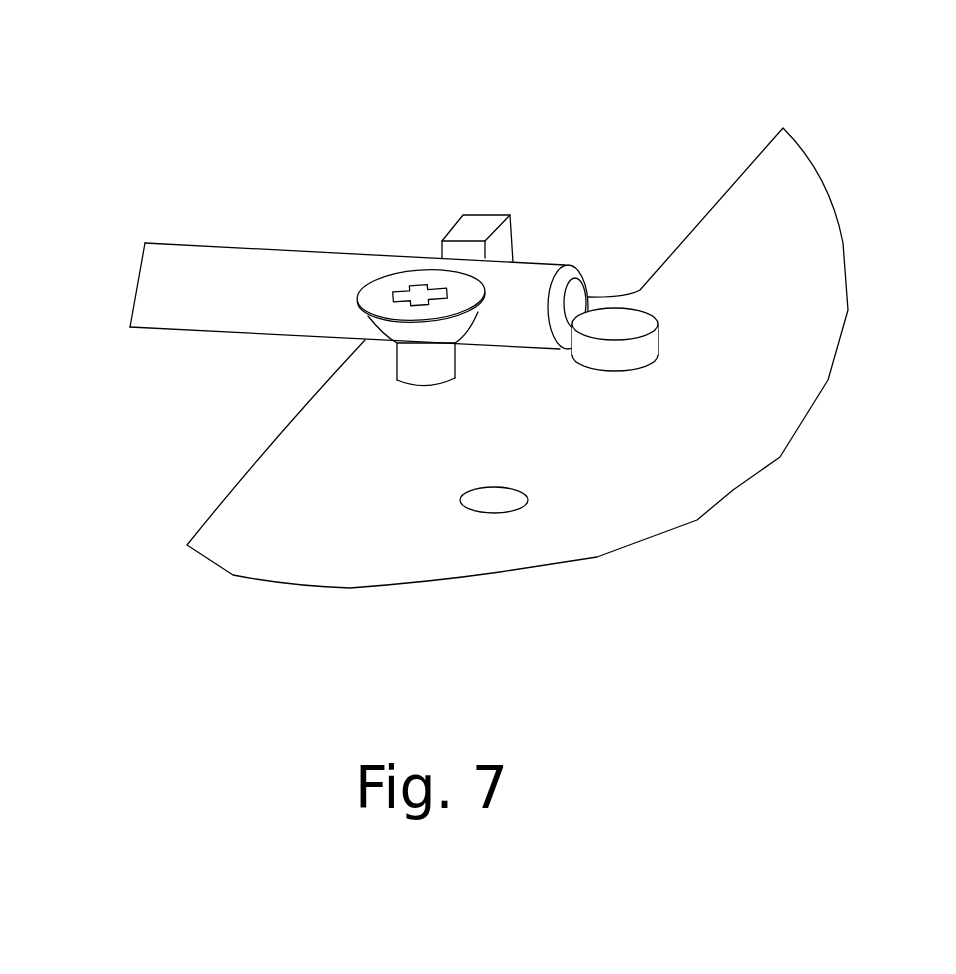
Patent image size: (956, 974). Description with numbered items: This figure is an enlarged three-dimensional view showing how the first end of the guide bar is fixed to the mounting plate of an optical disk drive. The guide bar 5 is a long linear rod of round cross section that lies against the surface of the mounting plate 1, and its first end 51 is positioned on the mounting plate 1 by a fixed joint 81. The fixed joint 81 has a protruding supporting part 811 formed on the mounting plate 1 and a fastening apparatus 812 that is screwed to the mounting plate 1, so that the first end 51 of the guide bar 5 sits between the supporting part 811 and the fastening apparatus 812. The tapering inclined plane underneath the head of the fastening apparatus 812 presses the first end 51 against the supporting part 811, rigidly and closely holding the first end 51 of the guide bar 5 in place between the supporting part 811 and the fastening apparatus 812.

The mounting plate 1 is at (213, 480).
The guide bar 5 is at (220, 233).
The first end 51 is at (540, 270).
The fixed joint 81 is at (411, 193).
The supporting part 811 is at (473, 230).
The fastening apparatus 812 is at (443, 167).